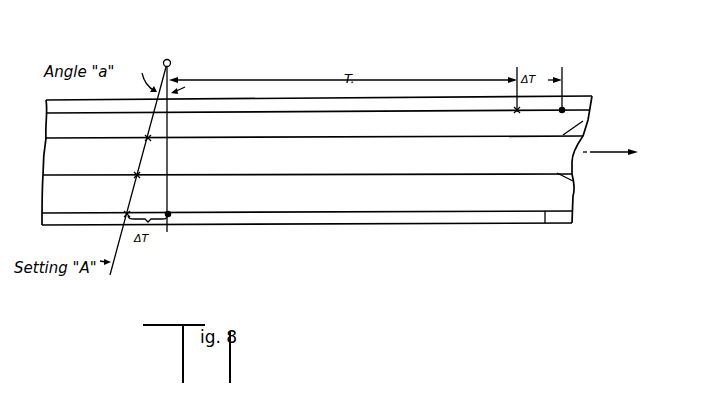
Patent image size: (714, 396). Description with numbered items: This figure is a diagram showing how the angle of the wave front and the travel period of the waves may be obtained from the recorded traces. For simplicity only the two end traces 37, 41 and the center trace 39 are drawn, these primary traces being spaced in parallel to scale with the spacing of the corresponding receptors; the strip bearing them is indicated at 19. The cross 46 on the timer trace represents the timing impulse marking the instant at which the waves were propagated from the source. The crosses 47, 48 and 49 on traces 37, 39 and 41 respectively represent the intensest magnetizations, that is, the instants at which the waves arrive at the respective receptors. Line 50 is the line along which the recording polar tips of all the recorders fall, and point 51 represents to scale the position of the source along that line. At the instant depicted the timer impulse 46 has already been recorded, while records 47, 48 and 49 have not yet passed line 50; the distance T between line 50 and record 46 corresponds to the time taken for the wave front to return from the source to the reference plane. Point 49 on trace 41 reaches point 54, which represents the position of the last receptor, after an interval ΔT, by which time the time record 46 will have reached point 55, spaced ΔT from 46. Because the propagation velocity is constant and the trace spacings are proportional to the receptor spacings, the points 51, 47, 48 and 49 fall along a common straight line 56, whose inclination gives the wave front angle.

The strip / workpiece 19 is at (390, 225).
The end trace 37 is at (583, 121).
The center trace 39 is at (573, 181).
The end trace 41 is at (545, 223).
The cross on the timer trace 46 is at (513, 112).
The cross 47 is at (146, 136).
The cross 48 is at (136, 174).
The cross 49 is at (125, 216).
The line 50 is at (170, 217).
The point 51 is at (171, 60).
The point 54 is at (171, 212).
The point 55 is at (565, 107).
The common straight line 56 is at (127, 213).